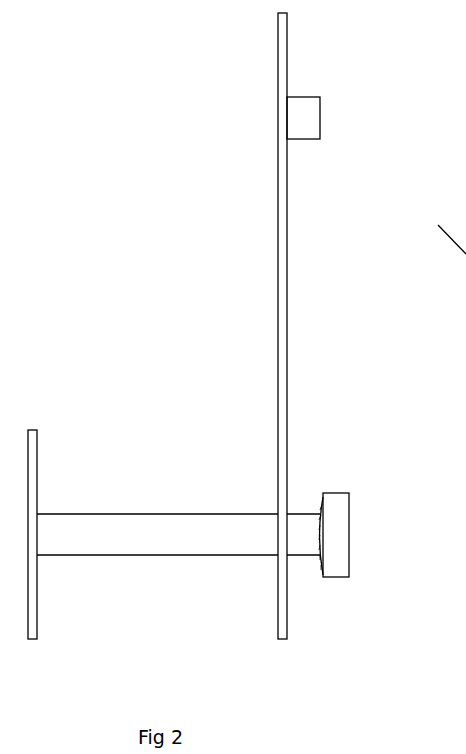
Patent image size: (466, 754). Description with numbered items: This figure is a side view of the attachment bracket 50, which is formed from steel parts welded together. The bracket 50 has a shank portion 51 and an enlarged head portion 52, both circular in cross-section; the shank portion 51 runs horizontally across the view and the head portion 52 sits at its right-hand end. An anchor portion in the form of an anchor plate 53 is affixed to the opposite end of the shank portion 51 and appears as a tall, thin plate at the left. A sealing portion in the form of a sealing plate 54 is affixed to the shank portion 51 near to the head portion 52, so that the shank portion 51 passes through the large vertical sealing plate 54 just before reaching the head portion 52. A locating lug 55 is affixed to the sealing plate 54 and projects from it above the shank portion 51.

The bracket 50 is at (181, 195).
The shank portion 51 is at (220, 513).
The enlarged head portion 52 is at (341, 494).
The anchor plate 53 is at (27, 428).
The sealing plate 54 is at (287, 273).
The locating lug 55 is at (320, 107).